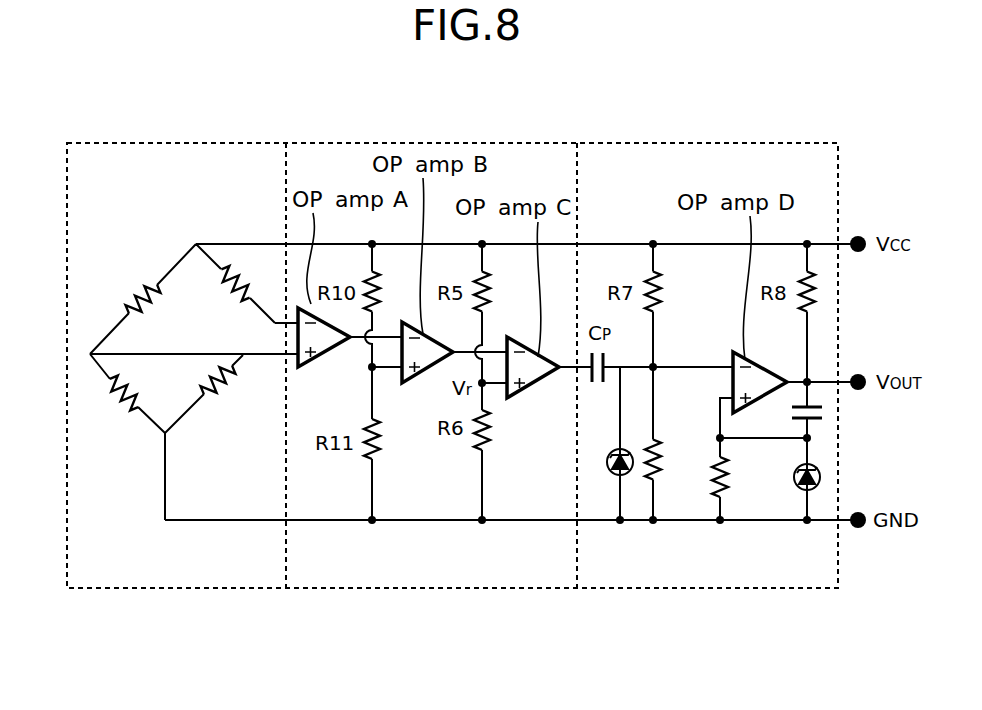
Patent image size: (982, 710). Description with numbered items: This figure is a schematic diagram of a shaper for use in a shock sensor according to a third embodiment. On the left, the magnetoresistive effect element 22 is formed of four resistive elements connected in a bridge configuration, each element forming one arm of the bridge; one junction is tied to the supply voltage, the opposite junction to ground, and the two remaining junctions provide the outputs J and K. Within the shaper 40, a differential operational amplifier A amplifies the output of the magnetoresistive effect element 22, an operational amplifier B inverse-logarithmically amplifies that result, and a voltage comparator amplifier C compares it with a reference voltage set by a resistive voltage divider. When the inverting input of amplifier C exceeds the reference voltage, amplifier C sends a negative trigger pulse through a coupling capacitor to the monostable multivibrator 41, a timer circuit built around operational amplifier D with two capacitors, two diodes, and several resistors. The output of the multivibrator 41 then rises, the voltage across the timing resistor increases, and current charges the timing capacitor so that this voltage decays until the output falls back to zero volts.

The magnetoresistive effect element 22 is at (223, 588).
The shaper 40 is at (597, 143).
The monostable multivibrator (timer circuit) 41 is at (708, 588).